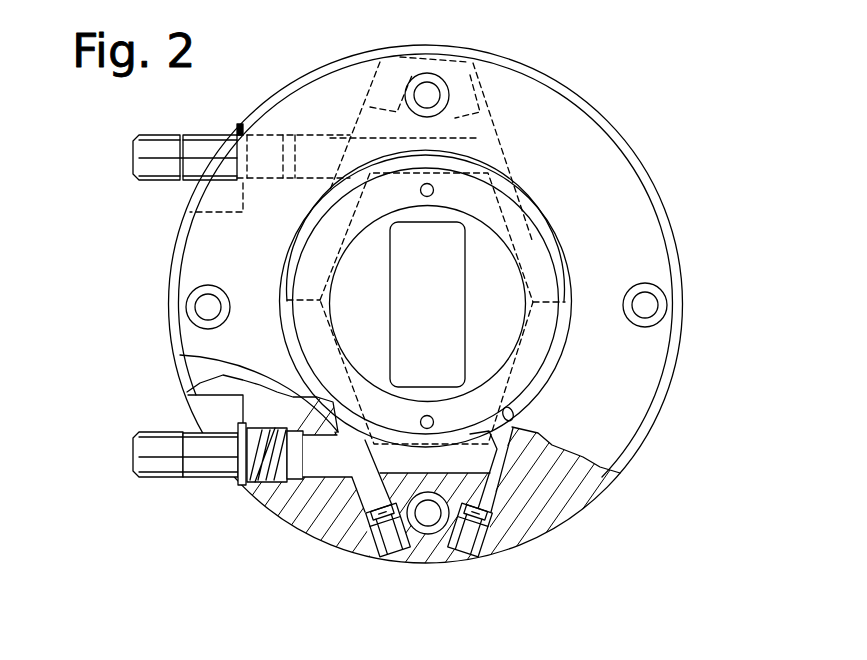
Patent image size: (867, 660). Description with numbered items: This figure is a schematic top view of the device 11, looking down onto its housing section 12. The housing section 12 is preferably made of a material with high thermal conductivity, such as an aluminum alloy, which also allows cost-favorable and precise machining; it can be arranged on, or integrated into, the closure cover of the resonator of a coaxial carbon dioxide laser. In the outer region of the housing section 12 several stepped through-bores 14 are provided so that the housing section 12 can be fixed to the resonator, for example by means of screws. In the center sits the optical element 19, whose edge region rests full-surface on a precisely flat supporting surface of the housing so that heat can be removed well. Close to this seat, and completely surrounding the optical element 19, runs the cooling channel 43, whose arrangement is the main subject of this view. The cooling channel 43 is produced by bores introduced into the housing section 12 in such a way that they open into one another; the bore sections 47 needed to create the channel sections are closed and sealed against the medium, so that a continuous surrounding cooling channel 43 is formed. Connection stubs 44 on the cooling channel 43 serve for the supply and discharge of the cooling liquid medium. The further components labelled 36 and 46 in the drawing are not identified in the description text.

The device 11 is at (637, 88).
The housing section 12 is at (525, 125).
The stepped through-bores 14 is at (668, 305).
The central bearing ring 36 is at (475, 203).
The optical element 19 is at (445, 348).
The cooling channel 43 is at (186, 355).
The connection stubs 44 is at (133, 157).
The bore sections 47 is at (365, 487).
The plug 46 is at (370, 542).